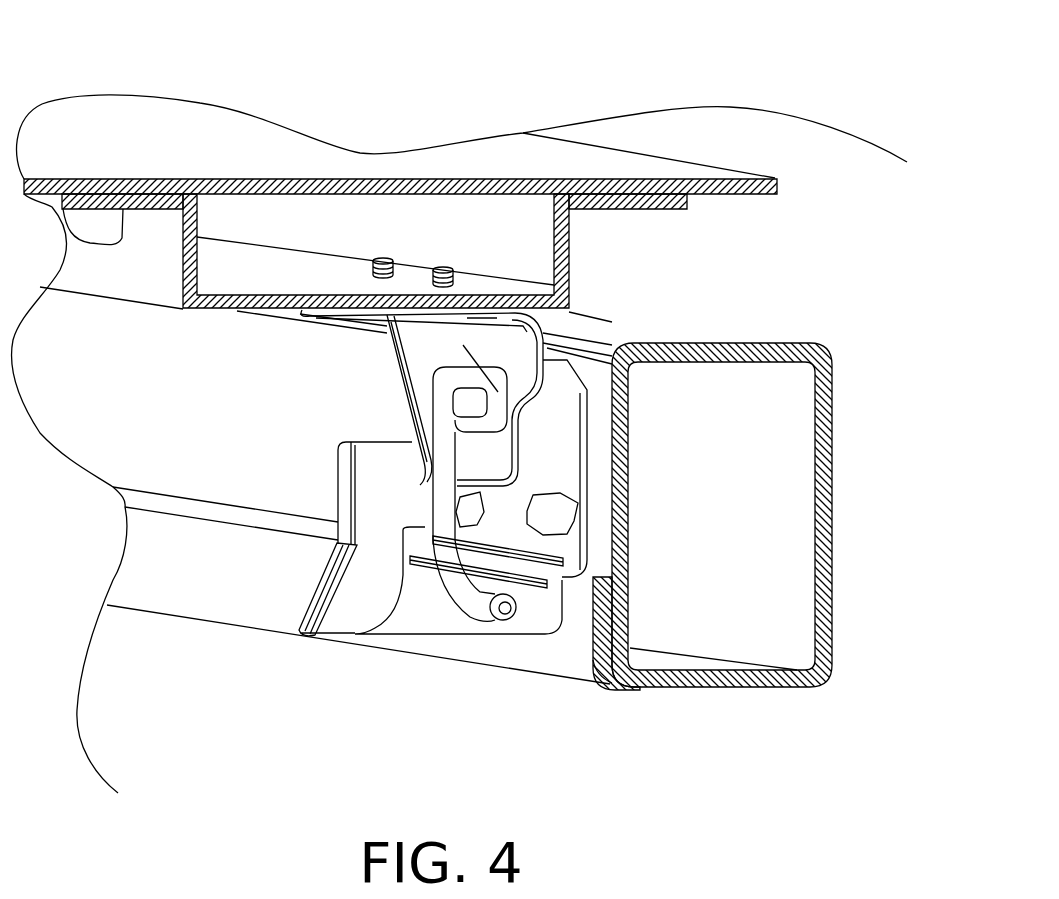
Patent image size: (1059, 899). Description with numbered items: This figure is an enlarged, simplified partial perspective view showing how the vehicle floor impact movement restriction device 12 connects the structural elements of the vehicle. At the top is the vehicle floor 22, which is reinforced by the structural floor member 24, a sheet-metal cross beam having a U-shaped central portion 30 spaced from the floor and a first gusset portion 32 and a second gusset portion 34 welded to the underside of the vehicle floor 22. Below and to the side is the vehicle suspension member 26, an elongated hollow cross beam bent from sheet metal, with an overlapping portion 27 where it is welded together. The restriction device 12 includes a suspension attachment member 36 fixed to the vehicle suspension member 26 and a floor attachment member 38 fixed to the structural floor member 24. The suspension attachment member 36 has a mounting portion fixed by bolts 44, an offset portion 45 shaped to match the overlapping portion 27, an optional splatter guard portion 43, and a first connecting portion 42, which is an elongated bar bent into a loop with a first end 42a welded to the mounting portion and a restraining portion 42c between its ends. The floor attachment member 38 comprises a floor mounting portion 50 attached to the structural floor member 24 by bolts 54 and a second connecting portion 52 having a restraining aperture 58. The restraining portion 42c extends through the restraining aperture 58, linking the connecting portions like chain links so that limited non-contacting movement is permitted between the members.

The vehicle floor impact movement restriction device 12 is at (461, 643).
The vehicle floor 22 is at (577, 169).
The structural floor member 24 is at (192, 309).
The vehicle suspension member 26 is at (753, 685).
The overlapping portion 27 is at (603, 627).
The U-shaped central portion 30 is at (210, 309).
The first gusset portion 32 is at (87, 247).
The second gusset portion 34 is at (620, 213).
The suspension attachment member 36 is at (590, 465).
The floor attachment member 38 is at (392, 352).
The first connecting portion 42 is at (449, 583).
The first end 42a is at (508, 613).
The restraining portion 42c is at (445, 369).
The splatter guard portion 43 is at (303, 637).
The bolts 44 is at (548, 535).
The offset portion 45 is at (535, 618).
The floor mounting portion 50 is at (577, 328).
The second connecting portion 52 is at (427, 465).
The bolts 54 is at (443, 270).
The restraining aperture 58 is at (443, 432).